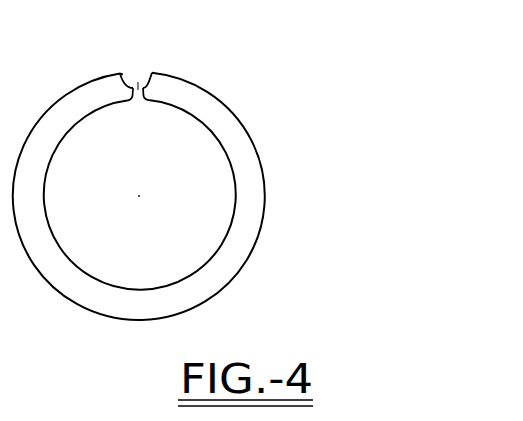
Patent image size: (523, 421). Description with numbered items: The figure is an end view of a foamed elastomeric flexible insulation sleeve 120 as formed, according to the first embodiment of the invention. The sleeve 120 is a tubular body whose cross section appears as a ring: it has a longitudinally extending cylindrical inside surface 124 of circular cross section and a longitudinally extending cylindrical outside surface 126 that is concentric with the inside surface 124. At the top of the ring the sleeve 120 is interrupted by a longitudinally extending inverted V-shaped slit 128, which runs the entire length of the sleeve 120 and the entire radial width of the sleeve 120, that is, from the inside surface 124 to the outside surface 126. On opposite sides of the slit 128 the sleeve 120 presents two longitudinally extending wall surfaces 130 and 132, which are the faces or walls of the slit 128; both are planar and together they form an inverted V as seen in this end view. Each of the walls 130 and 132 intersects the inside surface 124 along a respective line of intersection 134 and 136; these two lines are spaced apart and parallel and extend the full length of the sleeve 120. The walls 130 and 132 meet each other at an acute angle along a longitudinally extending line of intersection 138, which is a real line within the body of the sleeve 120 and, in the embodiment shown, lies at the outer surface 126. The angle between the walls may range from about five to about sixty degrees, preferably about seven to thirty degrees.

The foamed elastomeric flexible insulation sleeve 120 is at (173, 165).
The inside surface 124 is at (231, 226).
The outside surface 126 is at (297, 230).
The inverted V-shaped slit 128 is at (141, 108).
The wall surface 130 is at (147, 73).
The wall surface 132 is at (137, 73).
The line of intersection 134 is at (131, 103).
The line of intersection 136 is at (148, 101).
The line of intersection 138 is at (145, 90).